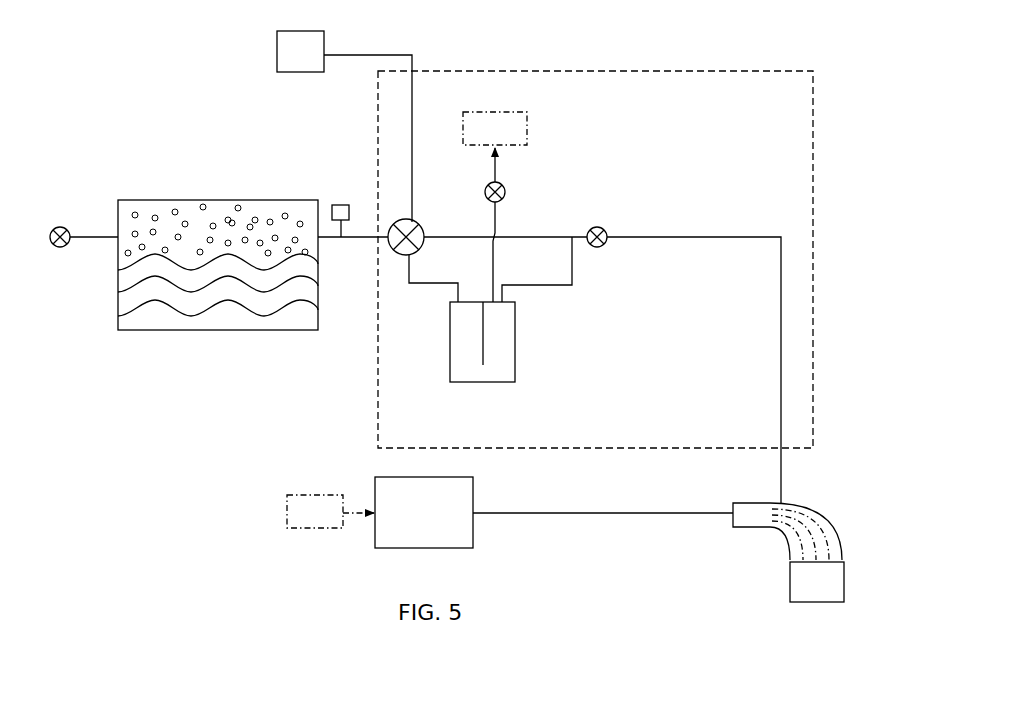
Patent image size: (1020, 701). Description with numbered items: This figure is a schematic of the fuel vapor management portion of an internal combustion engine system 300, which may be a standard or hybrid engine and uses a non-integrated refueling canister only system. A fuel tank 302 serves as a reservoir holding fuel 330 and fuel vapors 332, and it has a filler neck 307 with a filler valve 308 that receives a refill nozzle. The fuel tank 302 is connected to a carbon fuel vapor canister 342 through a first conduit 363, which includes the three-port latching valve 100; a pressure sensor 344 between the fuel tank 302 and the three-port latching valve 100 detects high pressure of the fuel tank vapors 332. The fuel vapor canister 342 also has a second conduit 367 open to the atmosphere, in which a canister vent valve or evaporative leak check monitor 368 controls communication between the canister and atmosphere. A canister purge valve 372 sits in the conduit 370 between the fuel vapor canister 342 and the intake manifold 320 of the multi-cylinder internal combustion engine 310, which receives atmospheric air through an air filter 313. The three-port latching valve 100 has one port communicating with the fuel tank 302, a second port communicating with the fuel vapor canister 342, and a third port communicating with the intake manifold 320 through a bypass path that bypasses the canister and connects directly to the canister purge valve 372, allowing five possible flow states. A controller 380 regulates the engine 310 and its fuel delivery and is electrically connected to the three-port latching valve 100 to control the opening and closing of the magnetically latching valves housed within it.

The three-port latching valve 100 is at (402, 218).
The internal combustion engine system 300 is at (567, 44).
The fuel tank 302 is at (218, 332).
The filler neck 307 is at (95, 234).
The filler valve 308 is at (51, 227).
The internal combustion engine 310 is at (845, 578).
The air filter 313 is at (473, 535).
The intake manifold 320 is at (833, 508).
The fuel 330 is at (149, 304).
The fuel vapors 332 is at (186, 216).
The fuel vapor canister 342 is at (454, 386).
The pressure sensor 344 is at (333, 203).
The first conduit 363 is at (355, 240).
The second conduit 367 is at (496, 263).
The canister vent valve 368 is at (509, 187).
The conduit 370 is at (572, 265).
The canister purge valve 372 is at (608, 229).
The controller 380 is at (277, 55).